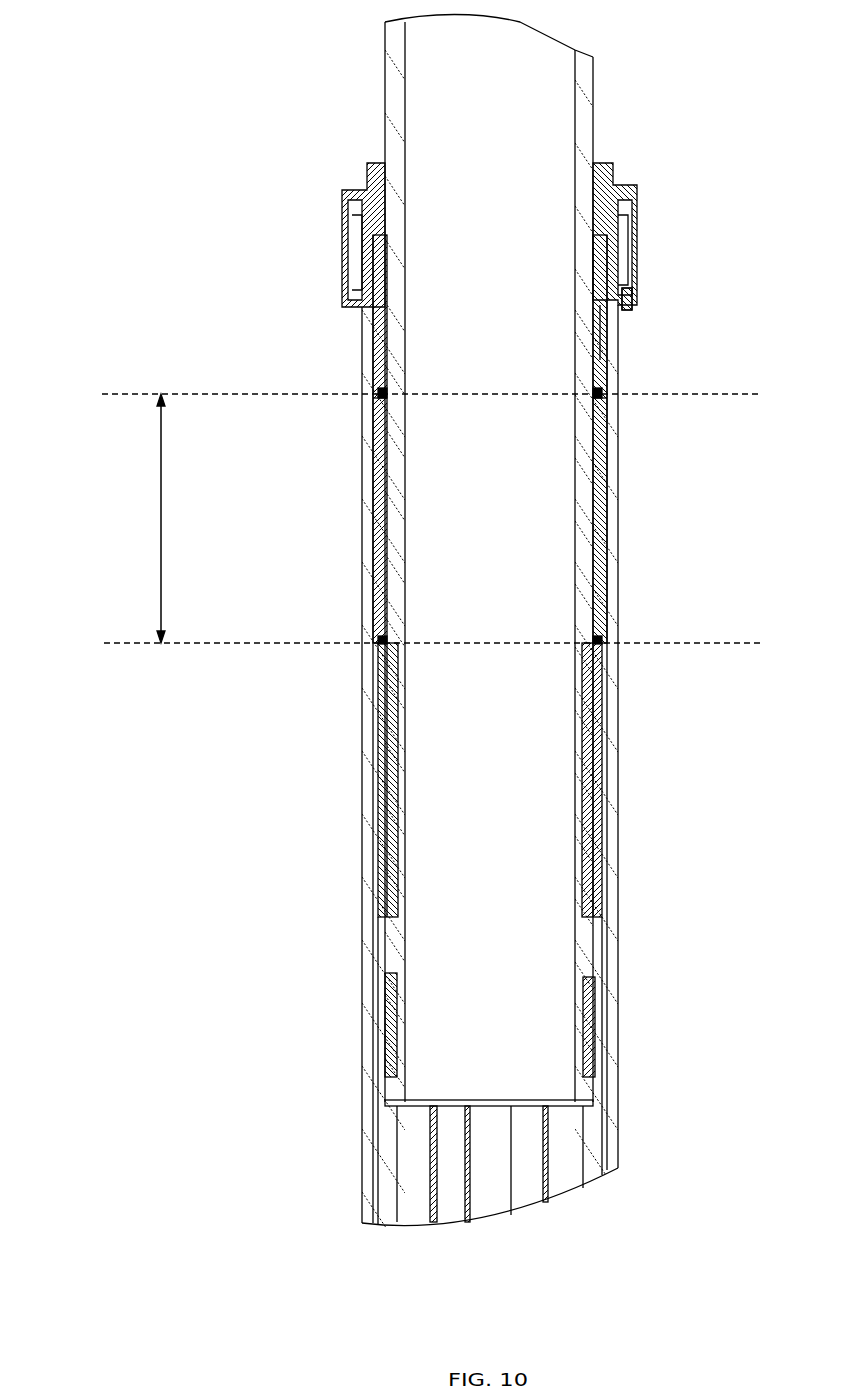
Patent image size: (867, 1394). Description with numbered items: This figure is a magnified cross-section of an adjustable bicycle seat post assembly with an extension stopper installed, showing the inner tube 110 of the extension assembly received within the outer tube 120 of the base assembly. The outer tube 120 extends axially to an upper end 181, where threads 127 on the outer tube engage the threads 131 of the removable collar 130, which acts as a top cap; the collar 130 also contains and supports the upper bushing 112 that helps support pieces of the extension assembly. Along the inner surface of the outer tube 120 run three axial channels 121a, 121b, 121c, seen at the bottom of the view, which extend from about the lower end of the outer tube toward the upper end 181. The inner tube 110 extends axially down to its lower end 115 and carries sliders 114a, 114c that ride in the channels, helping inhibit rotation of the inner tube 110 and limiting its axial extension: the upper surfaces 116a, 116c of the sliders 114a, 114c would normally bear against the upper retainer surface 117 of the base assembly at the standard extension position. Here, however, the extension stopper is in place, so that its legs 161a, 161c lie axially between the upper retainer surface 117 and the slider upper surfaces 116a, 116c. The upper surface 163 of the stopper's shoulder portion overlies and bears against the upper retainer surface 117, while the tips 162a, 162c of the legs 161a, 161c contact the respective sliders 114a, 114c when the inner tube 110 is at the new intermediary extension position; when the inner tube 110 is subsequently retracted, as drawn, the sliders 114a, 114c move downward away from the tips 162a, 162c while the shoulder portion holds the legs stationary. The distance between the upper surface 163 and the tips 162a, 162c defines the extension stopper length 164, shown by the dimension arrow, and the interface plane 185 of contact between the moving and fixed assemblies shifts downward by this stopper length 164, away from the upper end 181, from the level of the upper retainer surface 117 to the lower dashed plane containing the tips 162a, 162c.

The inner tube 110 is at (588, 197).
The upper bushing 112 is at (603, 352).
The slider 114a is at (390, 878).
The slider 114c is at (590, 862).
The lower end of inner tube 115 is at (395, 1103).
The upper surface of slider 116a is at (382, 645).
The upper surface of slider 116c is at (595, 645).
The upper retainer surface 117 is at (378, 393).
The outer tube 120 is at (613, 1010).
The axial channel 121a is at (407, 1188).
The axial channel 121b is at (488, 1200).
The axial channel 121c is at (530, 1190).
The threads 127 is at (625, 310).
The collar 130 is at (628, 260).
The threads 131 is at (627, 299).
The leg 161a is at (380, 530).
The leg 161c is at (600, 530).
The tip 162a is at (382, 640).
The tip 162c is at (595, 640).
The upper surface 163 is at (378, 398).
The extension stopper length 164 is at (161, 522).
The upper end of outer tube 181 is at (378, 240).
The interface plane 185 is at (411, 518).